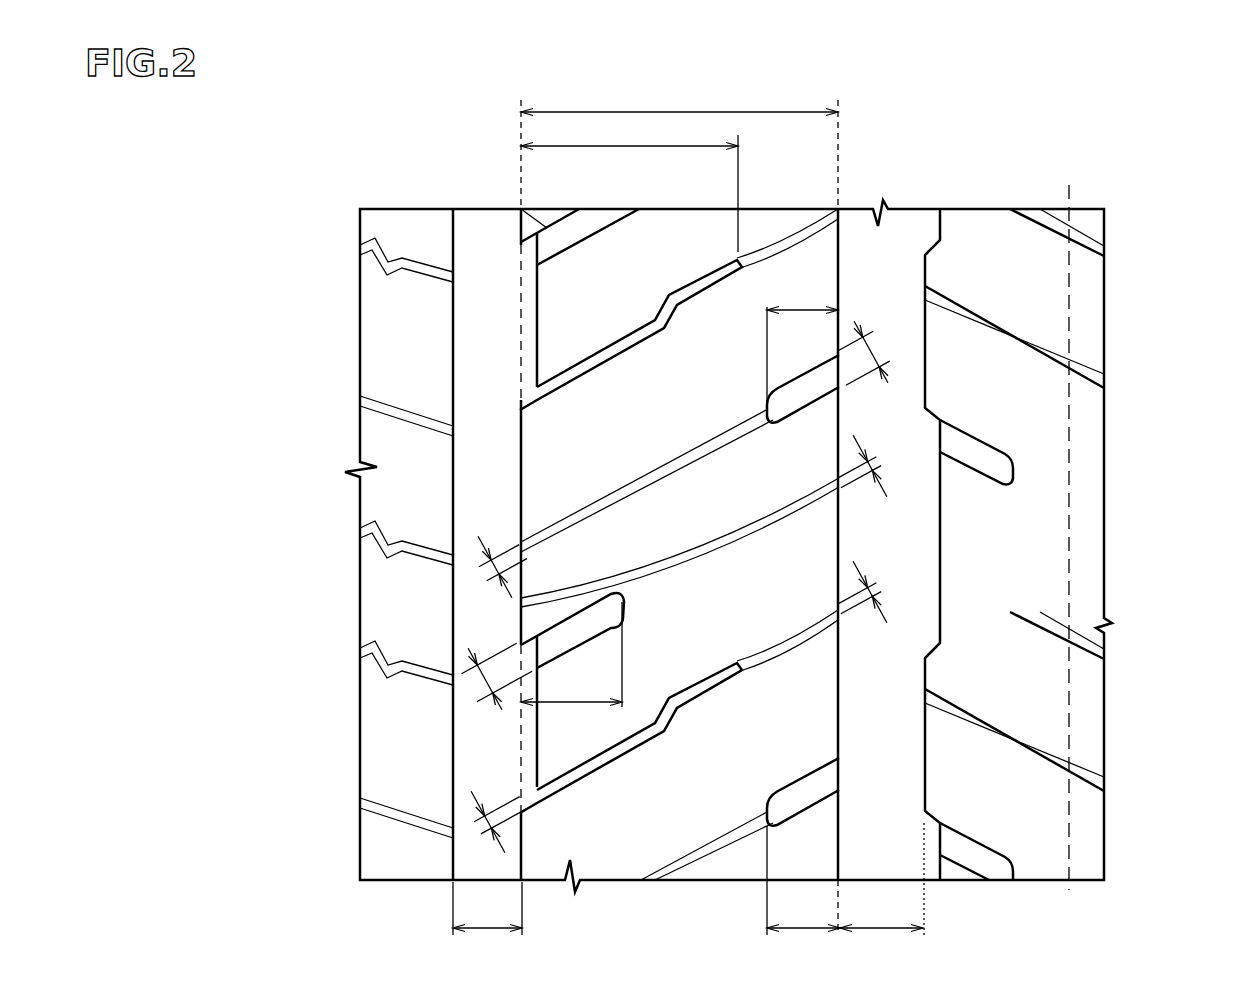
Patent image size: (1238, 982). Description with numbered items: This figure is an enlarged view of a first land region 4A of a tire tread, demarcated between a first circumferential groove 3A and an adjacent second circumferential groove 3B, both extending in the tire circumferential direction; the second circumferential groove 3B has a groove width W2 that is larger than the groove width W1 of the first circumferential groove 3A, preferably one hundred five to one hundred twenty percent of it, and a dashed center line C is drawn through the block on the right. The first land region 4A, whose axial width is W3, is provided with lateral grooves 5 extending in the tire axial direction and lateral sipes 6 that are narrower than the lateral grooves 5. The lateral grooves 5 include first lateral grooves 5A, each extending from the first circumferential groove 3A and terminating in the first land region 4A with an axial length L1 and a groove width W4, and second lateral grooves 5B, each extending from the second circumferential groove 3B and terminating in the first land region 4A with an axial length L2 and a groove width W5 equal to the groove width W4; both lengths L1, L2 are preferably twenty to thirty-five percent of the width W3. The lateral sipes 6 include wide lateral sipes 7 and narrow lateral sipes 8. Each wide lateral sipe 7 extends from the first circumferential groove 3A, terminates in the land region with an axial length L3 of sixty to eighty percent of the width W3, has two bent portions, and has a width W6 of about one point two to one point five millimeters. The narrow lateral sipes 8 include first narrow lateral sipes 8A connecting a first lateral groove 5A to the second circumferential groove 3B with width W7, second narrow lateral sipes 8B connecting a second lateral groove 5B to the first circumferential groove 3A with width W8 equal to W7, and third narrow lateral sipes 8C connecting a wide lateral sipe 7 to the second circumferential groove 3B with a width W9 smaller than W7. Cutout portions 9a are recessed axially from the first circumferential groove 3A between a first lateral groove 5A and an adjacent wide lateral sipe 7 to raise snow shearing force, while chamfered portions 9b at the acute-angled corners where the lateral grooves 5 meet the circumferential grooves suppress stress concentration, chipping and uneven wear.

The first circumferential groove 3A is at (487, 270).
The second circumferential groove 3B is at (905, 252).
The first land region 4A is at (660, 236).
The lateral grooves 5 is at (708, 912).
The first lateral groove 5A is at (623, 606).
The second lateral groove 5B is at (790, 800).
The lateral sipes 6 is at (185, 325).
The wide lateral sipe 7 is at (556, 381).
The narrow lateral sipes 8 is at (240, 385).
The first narrow lateral sipe 8A is at (678, 570).
The second narrow lateral sipe 8B is at (590, 508).
The third narrow lateral sipe 8C is at (777, 243).
The cutout portion 9a is at (527, 325).
The chamfered portion 9b is at (532, 630).
The tire equator (center line) C is at (1067, 523).
The groove width of first circumferential groove W1 is at (487, 908).
The groove width of second circumferential groove W2 is at (882, 879).
The width of first land region W3 is at (679, 146).
The groove width of first lateral groove W4 is at (480, 657).
The groove width of second lateral groove W5 is at (870, 352).
The width of wide lateral sipe W6 is at (482, 812).
The width of first narrow lateral sipe W7 is at (870, 463).
The width of second narrow lateral sipe W8 is at (487, 562).
The width of third narrow lateral sipe W9 is at (870, 592).
The length of first lateral groove L1 is at (521, 706).
The length of second lateral groove L2 is at (802, 307).
The length of wide lateral sipe L3 is at (629, 184).